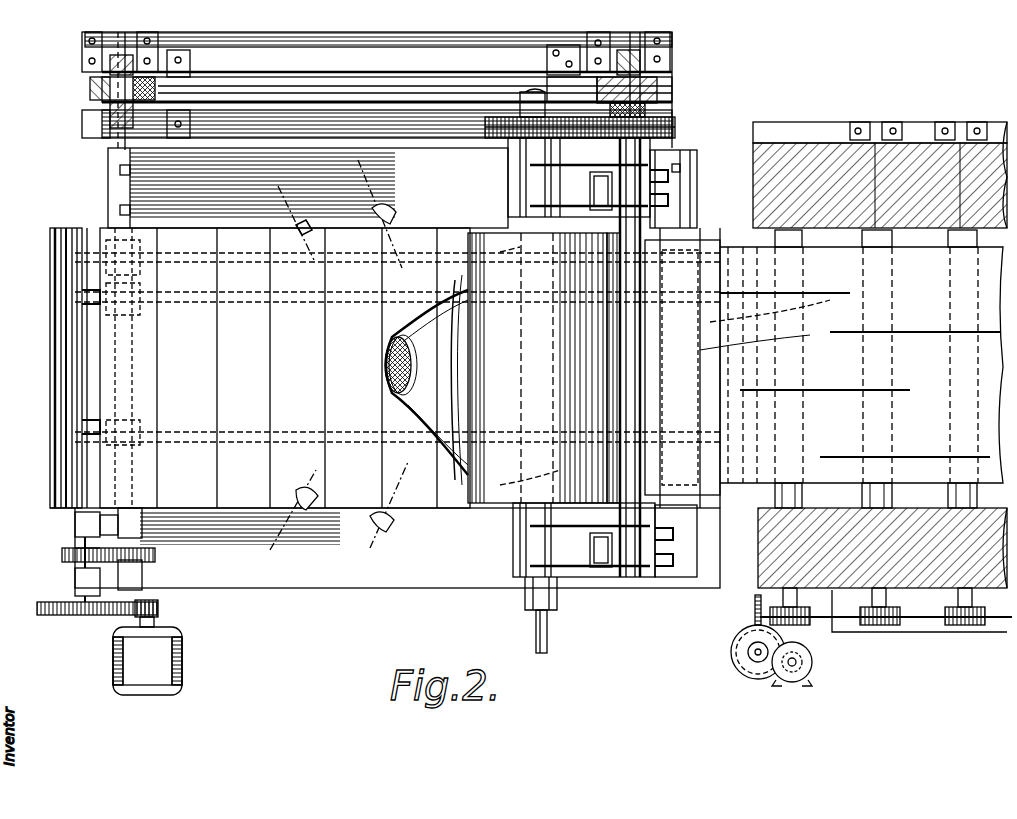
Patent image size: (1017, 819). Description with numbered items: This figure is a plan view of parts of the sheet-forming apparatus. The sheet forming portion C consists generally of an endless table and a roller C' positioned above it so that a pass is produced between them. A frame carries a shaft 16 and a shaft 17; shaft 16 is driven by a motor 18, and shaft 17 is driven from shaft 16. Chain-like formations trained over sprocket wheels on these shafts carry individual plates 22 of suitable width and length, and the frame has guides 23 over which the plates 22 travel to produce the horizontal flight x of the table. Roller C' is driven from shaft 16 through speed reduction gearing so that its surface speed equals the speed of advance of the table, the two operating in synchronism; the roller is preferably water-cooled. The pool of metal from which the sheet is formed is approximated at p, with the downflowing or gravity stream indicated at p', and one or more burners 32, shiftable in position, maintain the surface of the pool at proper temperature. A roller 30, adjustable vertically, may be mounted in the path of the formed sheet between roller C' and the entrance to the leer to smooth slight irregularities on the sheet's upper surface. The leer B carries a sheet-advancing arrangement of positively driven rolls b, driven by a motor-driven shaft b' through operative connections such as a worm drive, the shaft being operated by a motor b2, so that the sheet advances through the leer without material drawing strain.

The shaft 16 is at (115, 335).
The shaft 17 is at (778, 305).
The motor 18 is at (178, 658).
The plates 22 is at (52, 388).
The guides 23 is at (440, 162).
The roller 30 is at (705, 348).
The burners 32 is at (300, 212).
The leer B is at (812, 155).
The rolls b is at (876, 369).
The motor-driven shaft b' is at (883, 628).
The motor b2 is at (812, 664).
The sheet forming portion C is at (509, 351).
The roller C' is at (606, 357).
The pool of metal p is at (408, 380).
The downflowing stream p' is at (381, 365).
The horizontal flight x is at (285, 368).